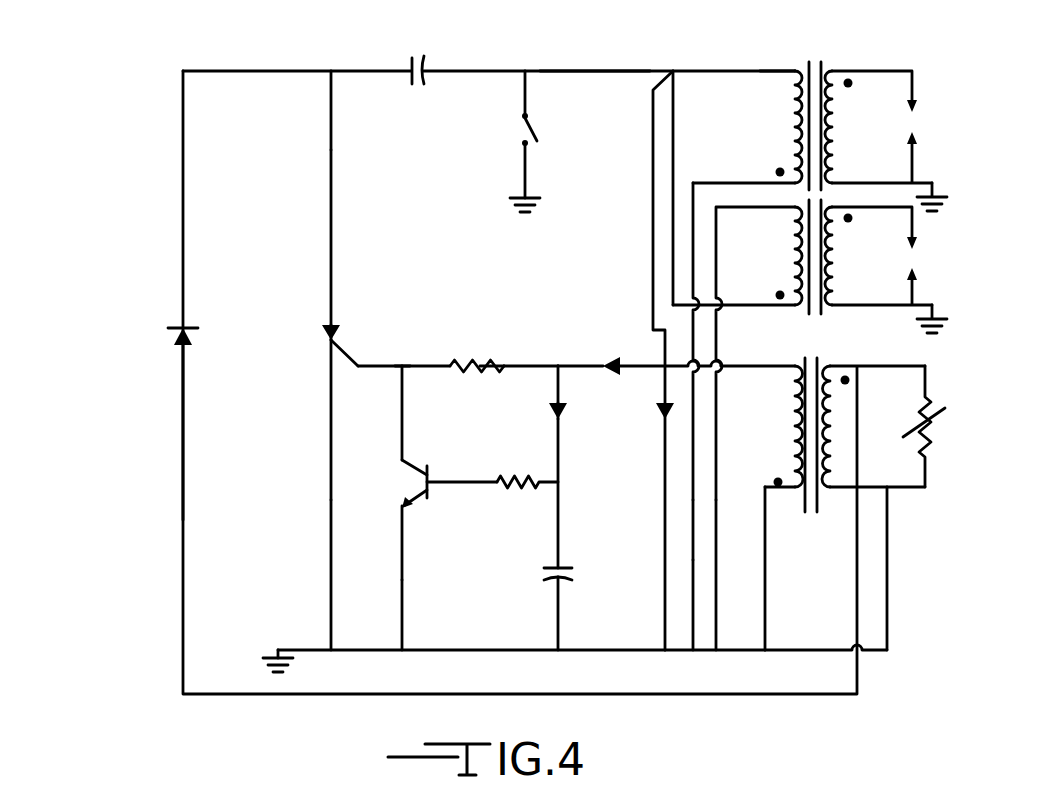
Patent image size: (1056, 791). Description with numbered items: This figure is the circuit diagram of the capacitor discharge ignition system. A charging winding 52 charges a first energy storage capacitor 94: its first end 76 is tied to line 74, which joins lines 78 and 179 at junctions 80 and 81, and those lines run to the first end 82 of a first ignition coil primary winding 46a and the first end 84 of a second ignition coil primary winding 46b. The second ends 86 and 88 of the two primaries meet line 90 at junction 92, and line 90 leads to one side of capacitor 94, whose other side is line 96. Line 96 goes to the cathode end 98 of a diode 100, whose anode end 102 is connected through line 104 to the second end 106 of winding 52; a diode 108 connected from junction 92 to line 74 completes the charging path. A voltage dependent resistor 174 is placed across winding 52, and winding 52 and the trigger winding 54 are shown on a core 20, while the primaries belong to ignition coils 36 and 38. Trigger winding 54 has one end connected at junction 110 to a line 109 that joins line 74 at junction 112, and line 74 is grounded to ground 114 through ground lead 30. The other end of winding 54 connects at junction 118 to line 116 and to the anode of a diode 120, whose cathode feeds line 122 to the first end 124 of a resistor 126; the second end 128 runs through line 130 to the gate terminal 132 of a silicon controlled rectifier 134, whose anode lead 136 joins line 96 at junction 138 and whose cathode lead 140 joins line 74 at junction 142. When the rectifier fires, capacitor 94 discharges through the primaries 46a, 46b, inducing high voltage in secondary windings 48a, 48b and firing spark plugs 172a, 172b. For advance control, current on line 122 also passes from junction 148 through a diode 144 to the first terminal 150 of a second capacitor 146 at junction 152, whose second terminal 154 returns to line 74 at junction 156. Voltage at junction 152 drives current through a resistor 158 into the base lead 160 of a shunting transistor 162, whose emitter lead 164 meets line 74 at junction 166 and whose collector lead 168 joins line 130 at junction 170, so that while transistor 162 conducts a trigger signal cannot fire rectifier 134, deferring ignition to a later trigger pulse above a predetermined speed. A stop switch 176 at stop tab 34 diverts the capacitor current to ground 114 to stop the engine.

The output transformer 20 is at (818, 512).
The ground lead 30 is at (300, 650).
The stop tab 34 is at (525, 71).
The ignition coil 36 is at (830, 62).
The ignition coil 38 is at (822, 316).
The first ignition coil primary winding 46a is at (795, 266).
The second ignition coil primary winding 46b is at (790, 98).
The secondary winding 48a is at (837, 268).
The secondary winding 48b is at (846, 100).
The charging winding 52 is at (840, 410).
The trigger winding 54 is at (792, 419).
The line 74 is at (462, 650).
The first end of charging winding 76 is at (850, 487).
The line 78 is at (716, 597).
The junction 80 is at (714, 650).
The junction 81 is at (693, 650).
The first end of first primary winding 82 is at (750, 207).
The first end of second primary winding 84 is at (745, 183).
The second end of winding 46b 86 is at (773, 71).
The second end of winding 46a 88 is at (757, 300).
The line 90 is at (588, 71).
The junction 92 is at (668, 72).
The capacitor 94 is at (423, 71).
The line 96 is at (251, 71).
The first cathode end of diode 98 is at (186, 326).
The diode 100 is at (188, 339).
The conductor 102 is at (183, 418).
The line 104 is at (183, 515).
The second end of charging winding 106 is at (835, 367).
The diode 108 is at (664, 412).
The conductor 109 is at (765, 607).
The junction 110 is at (765, 487).
The junction 112 is at (765, 650).
The ground 114 is at (540, 198).
The line 116 is at (727, 366).
The junction 118 is at (754, 366).
The diode 120 is at (600, 370).
The line 122 is at (588, 366).
The first end of resistor 124 is at (520, 366).
The resistor 126 is at (485, 366).
The second end of resistor 128 is at (449, 366).
The line 130 is at (358, 366).
The gate terminal 132 is at (339, 342).
The silicon controlled rectifier 134 is at (333, 323).
The anode lead 136 is at (331, 223).
The junction 138 is at (332, 71).
The cathode lead 140 is at (331, 438).
The junction 142 is at (332, 650).
The diode 144 is at (568, 411).
The capacitor 146 is at (560, 568).
The junction 148 is at (561, 366).
The first terminal of capacitor 146 150 is at (558, 522).
The junction 152 is at (560, 479).
The second terminal of capacitor 146 154 is at (560, 584).
The junction 156 is at (560, 650).
The resistor 158 is at (497, 485).
The base lead 160 is at (427, 469).
The transistor 162 is at (417, 453).
The emitter lead 164 is at (402, 520).
The junction 166 is at (402, 649).
The collector lead 168 is at (404, 391).
The junction 170 is at (401, 366).
The spark plug 172a is at (915, 250).
The spark plug 172b is at (917, 115).
The voltage dependent resistor 174 is at (935, 403).
The stop switch 176 is at (533, 129).
The line 179 is at (695, 480).